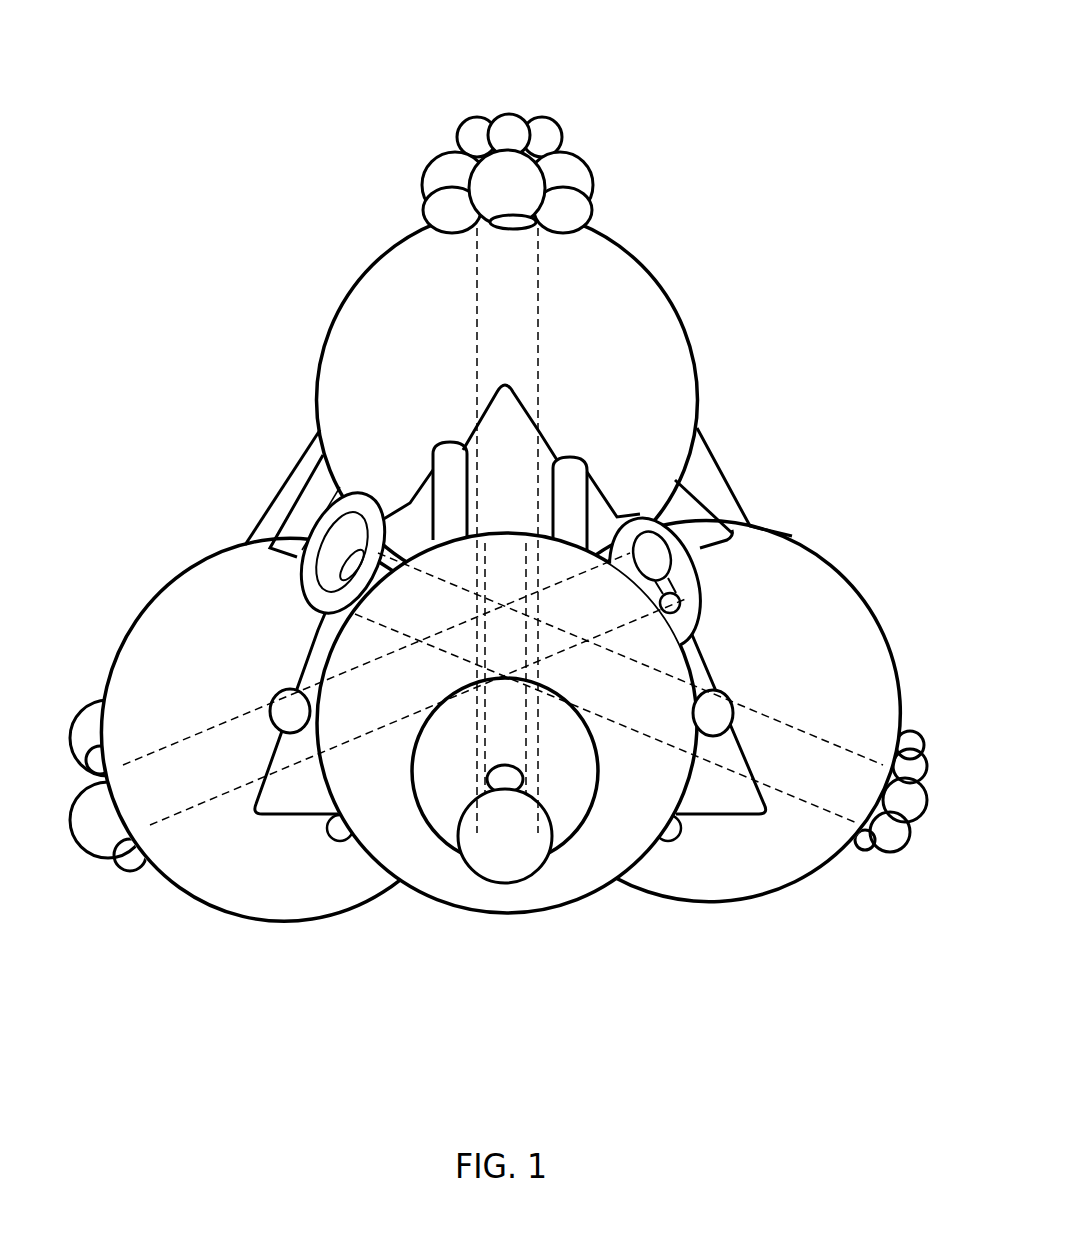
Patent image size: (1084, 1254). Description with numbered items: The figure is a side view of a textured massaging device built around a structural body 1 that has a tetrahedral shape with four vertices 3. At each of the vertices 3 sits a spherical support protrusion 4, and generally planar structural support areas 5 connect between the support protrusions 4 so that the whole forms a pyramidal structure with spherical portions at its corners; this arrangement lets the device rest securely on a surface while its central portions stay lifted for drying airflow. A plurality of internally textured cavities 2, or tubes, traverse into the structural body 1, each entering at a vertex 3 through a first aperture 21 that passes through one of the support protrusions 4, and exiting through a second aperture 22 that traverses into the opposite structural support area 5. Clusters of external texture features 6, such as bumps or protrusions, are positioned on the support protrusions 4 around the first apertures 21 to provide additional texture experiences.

The structural body 1 is at (210, 423).
The cavities 2 is at (528, 303).
The vertices 3 is at (518, 72).
The support protrusions 4 is at (680, 385).
The structural support areas 5 is at (298, 478).
The external texture features 6 is at (440, 158).
The first aperture 21 is at (498, 770).
The second aperture 22 is at (313, 553).